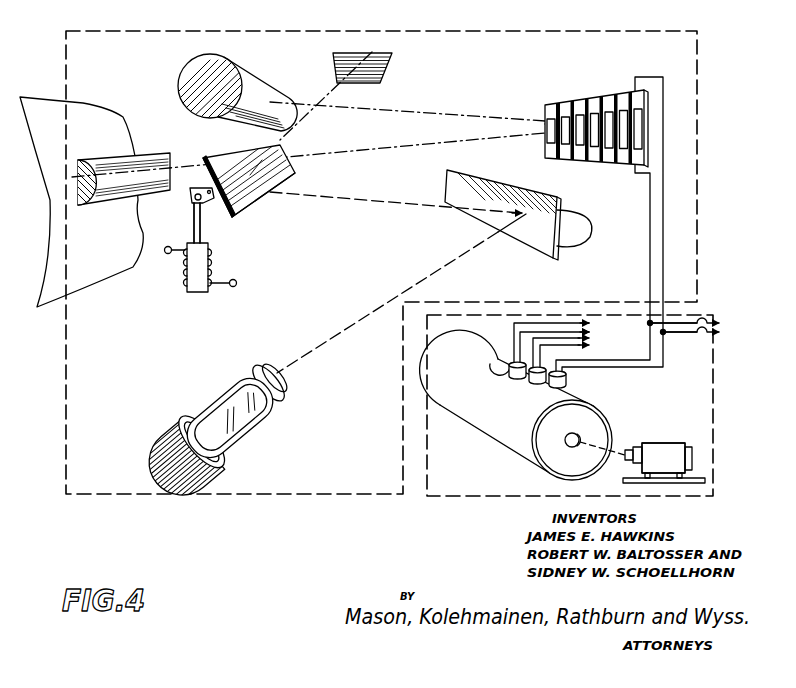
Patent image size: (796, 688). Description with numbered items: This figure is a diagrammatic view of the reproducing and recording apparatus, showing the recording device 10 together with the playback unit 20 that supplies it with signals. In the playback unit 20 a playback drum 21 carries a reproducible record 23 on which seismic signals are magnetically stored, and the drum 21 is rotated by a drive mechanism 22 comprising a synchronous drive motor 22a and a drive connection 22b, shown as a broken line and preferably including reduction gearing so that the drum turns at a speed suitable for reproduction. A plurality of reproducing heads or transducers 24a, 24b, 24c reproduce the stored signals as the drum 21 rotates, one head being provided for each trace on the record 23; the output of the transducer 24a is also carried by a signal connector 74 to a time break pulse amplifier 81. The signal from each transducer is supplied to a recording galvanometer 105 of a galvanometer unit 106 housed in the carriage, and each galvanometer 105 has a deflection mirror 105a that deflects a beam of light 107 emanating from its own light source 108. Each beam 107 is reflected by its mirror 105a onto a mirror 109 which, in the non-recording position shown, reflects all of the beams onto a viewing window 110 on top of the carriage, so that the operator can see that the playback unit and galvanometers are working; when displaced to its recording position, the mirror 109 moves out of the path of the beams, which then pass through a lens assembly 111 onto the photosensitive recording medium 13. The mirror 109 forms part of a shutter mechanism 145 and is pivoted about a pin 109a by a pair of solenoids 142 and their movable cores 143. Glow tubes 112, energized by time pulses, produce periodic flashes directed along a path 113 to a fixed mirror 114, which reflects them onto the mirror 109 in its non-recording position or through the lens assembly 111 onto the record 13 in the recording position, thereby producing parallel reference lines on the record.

The recording portion 10 is at (219, 33).
The recording medium 13 is at (80, 278).
The playback unit 20 is at (697, 404).
The playback drum 21 is at (592, 421).
The drive mechanism 22 is at (678, 437).
The synchronous drive motor 22a is at (676, 462).
The drive connection 22b is at (616, 448).
The reproducible record 23 is at (494, 440).
The reproducing head 24a is at (568, 381).
The reproducing head 24b is at (534, 383).
The reproducing head 24c is at (508, 368).
The signal connector 74 is at (700, 328).
The time break pulse amplifier 81 is at (747, 331).
The recording galvanometer 105 is at (633, 161).
The deflection mirror 105a is at (638, 117).
The galvanometer unit 106 is at (650, 128).
The beam of light 107 is at (447, 112).
The light source 108 is at (274, 94).
The mirror 109 is at (295, 175).
The pin 109a is at (206, 205).
The viewing window 110 is at (383, 77).
The lens assembly 111 is at (116, 202).
The glow tube 112 is at (238, 379).
The path 113 is at (390, 303).
The fixed mirror 114 is at (533, 238).
The solenoid 142 is at (192, 292).
The movable core 143 is at (191, 224).
The shutter mechanism 145 is at (252, 209).